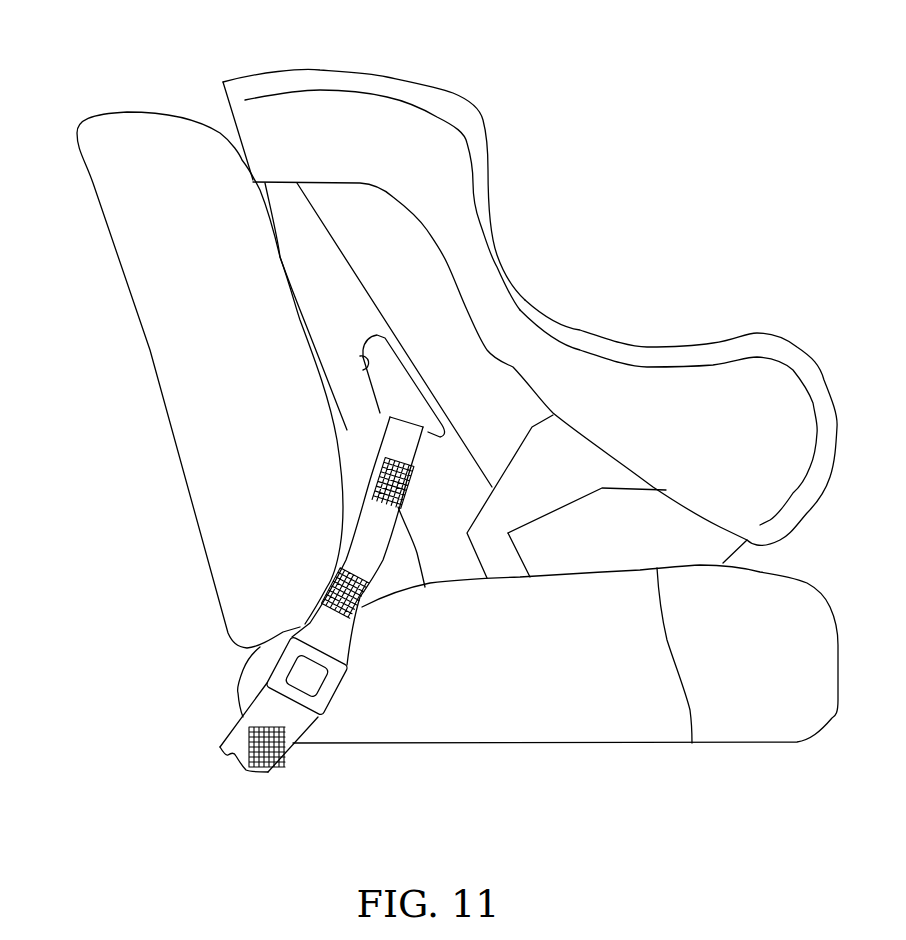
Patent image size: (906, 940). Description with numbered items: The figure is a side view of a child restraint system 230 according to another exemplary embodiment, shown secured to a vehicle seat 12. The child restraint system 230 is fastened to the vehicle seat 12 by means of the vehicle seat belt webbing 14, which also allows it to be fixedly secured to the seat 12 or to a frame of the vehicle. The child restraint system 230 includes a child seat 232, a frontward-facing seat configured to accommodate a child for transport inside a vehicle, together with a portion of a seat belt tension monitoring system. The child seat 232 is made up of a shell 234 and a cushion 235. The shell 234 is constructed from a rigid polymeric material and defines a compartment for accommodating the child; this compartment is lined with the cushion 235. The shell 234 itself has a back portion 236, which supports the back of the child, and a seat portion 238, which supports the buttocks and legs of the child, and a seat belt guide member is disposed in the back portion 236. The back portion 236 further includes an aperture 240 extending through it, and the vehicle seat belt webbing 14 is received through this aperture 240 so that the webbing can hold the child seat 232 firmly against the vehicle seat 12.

The vehicle seat 12 is at (830, 723).
The vehicle seat belt webbing 14 is at (360, 617).
The child restraint system 230 is at (640, 163).
The child seat 232 is at (823, 361).
The shell 234 is at (272, 257).
The cushion 235 is at (486, 116).
The back portion 236 is at (347, 427).
The seat portion 238 is at (692, 743).
The aperture 240 is at (360, 355).